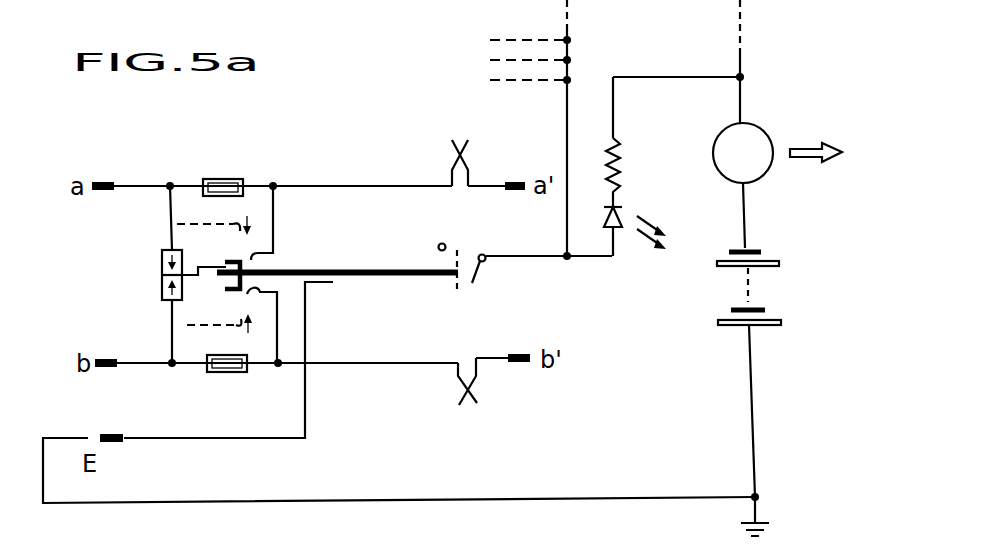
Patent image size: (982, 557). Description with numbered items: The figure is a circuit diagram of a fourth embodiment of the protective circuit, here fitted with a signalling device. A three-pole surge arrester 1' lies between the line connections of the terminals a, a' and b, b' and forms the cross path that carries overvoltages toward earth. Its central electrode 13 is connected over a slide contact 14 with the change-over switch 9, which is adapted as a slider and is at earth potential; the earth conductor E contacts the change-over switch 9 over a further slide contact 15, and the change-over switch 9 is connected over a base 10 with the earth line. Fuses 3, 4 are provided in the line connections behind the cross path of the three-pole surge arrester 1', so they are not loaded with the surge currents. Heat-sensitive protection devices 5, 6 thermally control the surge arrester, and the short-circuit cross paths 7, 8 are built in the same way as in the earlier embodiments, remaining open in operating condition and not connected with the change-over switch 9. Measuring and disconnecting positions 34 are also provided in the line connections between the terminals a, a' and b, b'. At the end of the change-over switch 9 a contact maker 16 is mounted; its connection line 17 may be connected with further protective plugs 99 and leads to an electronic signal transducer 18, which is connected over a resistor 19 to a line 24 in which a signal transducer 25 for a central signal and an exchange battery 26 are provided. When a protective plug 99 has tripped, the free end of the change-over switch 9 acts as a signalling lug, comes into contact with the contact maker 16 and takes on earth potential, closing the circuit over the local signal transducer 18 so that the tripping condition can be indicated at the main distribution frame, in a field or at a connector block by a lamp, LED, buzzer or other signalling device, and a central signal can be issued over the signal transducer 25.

The three-pole surge arrester 1' is at (141, 274).
The fuse 3 is at (217, 180).
The fuse 4 is at (225, 373).
The heat-sensitive protection device 5 is at (214, 235).
The heat-sensitive protection device 6 is at (219, 315).
The short-circuit cross path 7 is at (275, 226).
The short-circuit cross path 8 is at (277, 327).
The change-over switch 9 is at (373, 266).
The base 10 is at (301, 269).
The central electrode 13 is at (162, 278).
The slide contact 14 is at (205, 265).
The slide contact 15 is at (333, 280).
The contact maker 16 is at (478, 270).
The connection line 17 is at (522, 256).
The electronic signal transducer 18 is at (619, 230).
The resistor 19 is at (620, 146).
The line 24 is at (756, 408).
The signal transducer 25 is at (763, 137).
The exchange battery 26 is at (740, 288).
The measuring and disconnecting position 34 is at (459, 180).
The protective plug 99 is at (490, 40).